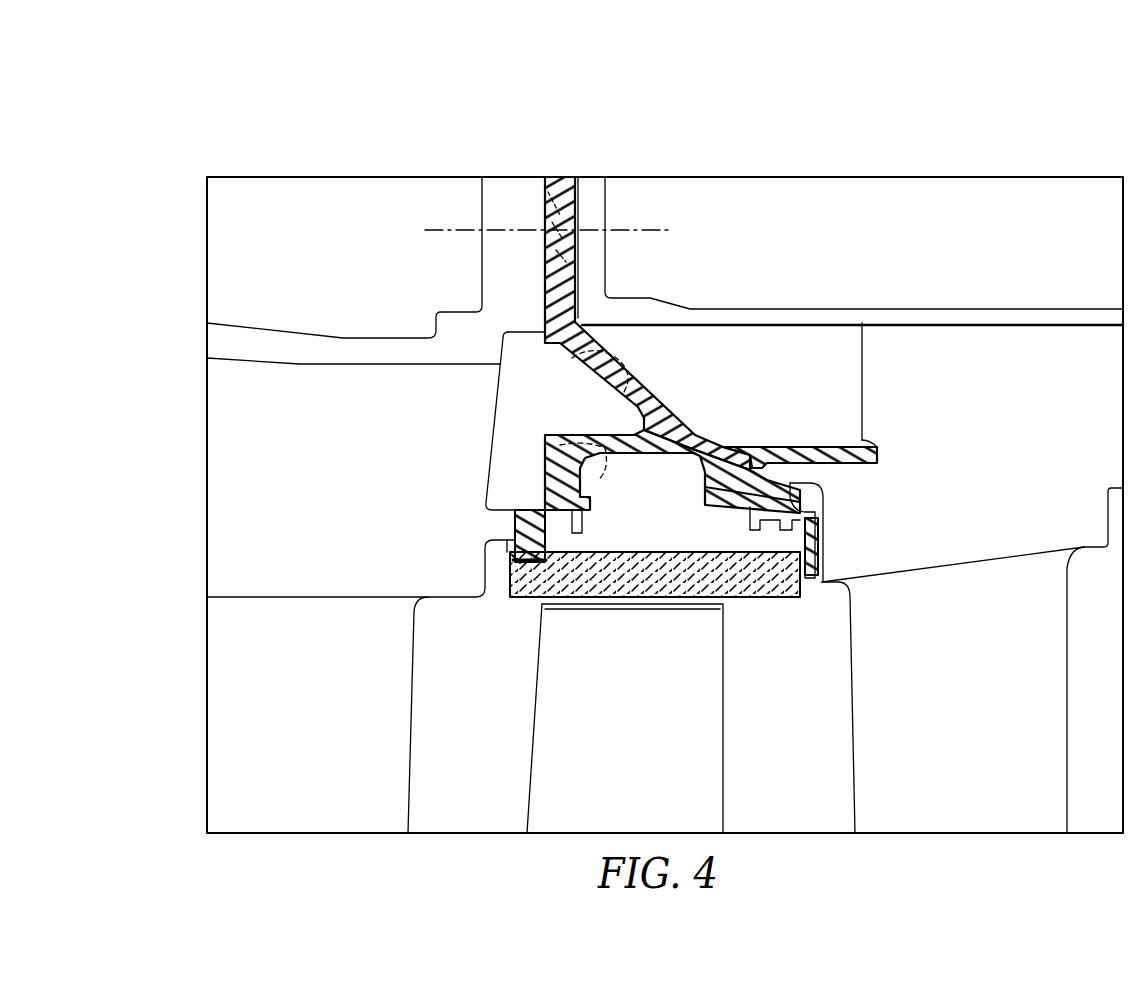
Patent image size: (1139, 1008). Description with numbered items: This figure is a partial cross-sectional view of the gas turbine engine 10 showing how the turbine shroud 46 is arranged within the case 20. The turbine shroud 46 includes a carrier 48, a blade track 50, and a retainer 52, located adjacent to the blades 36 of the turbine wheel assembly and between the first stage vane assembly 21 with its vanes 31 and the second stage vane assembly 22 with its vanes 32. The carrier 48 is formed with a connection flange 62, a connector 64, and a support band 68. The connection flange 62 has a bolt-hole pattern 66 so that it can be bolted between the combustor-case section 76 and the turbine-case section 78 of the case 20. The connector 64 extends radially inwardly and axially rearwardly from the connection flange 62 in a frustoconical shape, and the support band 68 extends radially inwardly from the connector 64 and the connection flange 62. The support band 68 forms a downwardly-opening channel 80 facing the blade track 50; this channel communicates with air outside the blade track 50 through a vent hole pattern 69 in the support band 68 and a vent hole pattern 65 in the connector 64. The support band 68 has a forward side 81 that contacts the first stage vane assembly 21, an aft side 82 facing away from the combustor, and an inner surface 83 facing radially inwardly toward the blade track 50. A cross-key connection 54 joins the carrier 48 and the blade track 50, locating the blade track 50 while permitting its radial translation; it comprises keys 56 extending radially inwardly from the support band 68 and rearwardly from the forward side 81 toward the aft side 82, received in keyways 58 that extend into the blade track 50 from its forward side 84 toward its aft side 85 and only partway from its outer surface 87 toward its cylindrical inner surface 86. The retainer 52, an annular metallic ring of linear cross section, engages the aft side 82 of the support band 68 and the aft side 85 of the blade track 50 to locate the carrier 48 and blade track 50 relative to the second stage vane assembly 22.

The gas turbine engine 10 is at (250, 145).
The case 20 is at (972, 315).
The first stage vane assembly 21 is at (277, 373).
The second stage vane assembly 22 is at (1010, 350).
The vanes 31 is at (378, 765).
The vanes 32 is at (888, 795).
The blades 36 is at (560, 810).
The turbine shroud 46 is at (712, 402).
The carrier 48 is at (596, 344).
The blade track 50 is at (745, 600).
The retainer 52 is at (826, 545).
The cross-key connection 54 is at (492, 556).
The keys 56 is at (515, 535).
The keyways 58 is at (505, 580).
The connection flange 62 is at (577, 207).
The connector 64 is at (668, 400).
The vent hole pattern 65 is at (585, 358).
The bolt-hole pattern 66 is at (560, 212).
The support band 68 is at (730, 440).
The vent hole pattern 69 is at (556, 452).
The combustor-case section 76 is at (233, 345).
The turbine-case section 78 is at (1068, 313).
The downwardly-opening channel 80 is at (648, 462).
The forward side 81 is at (540, 520).
The aft side 82 is at (828, 505).
The inner surface 83 is at (790, 545).
The forward side 84 is at (512, 590).
The aft side 85 is at (805, 590).
The inner surface 86 is at (532, 598).
The outer surface 87 is at (640, 548).